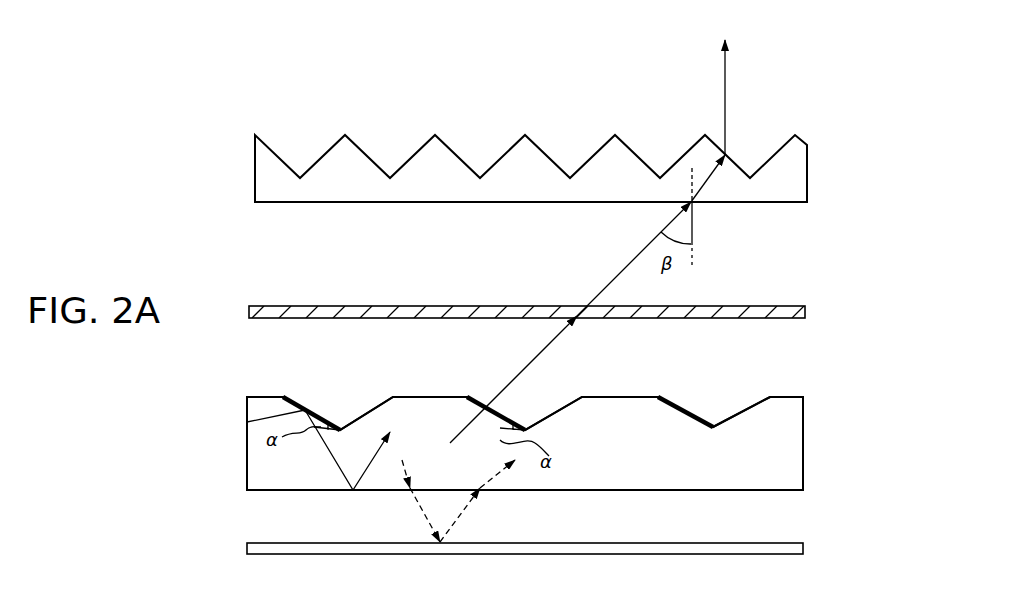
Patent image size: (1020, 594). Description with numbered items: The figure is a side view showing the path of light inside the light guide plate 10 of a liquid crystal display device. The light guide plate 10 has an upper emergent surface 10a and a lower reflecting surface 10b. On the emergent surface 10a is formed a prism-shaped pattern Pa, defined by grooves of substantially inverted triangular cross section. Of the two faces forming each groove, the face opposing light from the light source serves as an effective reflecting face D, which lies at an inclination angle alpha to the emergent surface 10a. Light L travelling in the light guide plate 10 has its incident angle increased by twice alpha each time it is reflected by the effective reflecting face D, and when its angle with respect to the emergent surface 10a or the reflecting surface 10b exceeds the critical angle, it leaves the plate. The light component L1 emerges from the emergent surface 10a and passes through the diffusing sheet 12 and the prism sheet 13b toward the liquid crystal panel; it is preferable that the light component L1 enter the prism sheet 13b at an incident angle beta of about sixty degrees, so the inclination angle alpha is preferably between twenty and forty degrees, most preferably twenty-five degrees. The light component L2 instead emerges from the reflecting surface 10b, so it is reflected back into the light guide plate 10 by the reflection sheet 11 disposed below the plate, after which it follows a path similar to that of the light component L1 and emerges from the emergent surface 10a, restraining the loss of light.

The prism sheet 13b is at (807, 183).
The diffusing sheet 12 is at (805, 312).
The light guide plate 10 is at (790, 447).
The emergent surface 10a is at (790, 398).
The reflecting surface 10b is at (775, 490).
The reflection sheet 11 is at (803, 550).
The light component L1 is at (725, 63).
The light component L2 is at (458, 501).
The light L is at (325, 450).
The prism-shaped pattern Pa is at (326, 398).
The effective reflecting face D is at (303, 404).